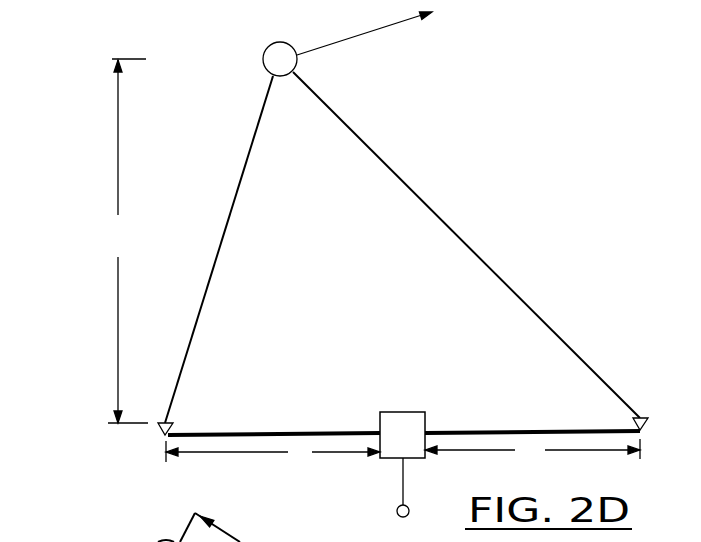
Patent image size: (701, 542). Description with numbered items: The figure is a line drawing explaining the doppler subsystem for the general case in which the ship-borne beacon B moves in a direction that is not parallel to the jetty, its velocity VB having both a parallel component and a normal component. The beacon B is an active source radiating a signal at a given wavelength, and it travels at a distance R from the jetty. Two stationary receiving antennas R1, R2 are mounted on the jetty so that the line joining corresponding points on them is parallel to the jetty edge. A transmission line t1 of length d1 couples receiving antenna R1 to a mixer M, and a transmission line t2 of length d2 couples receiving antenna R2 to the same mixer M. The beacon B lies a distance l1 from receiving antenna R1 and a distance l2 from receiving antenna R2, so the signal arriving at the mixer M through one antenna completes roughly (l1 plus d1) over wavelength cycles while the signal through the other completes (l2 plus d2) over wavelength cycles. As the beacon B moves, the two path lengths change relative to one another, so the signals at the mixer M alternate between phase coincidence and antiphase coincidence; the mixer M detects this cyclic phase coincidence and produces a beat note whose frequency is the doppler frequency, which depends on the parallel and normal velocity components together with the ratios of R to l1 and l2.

The beacon B is at (280, 59).
The beacon velocity VB is at (376, 27).
The distance from jetty R is at (128, 241).
The distance from beacon to receiving antenna R1 l1 is at (262, 56).
The distance from beacon to receiving antenna R2 l2 is at (317, 22).
The receiving antenna R1 is at (158, 440).
The receiving antenna R2 is at (647, 420).
The transmission line t1 is at (283, 432).
The transmission line t2 is at (505, 430).
The length of transmission line t1 d1 is at (273, 454).
The length of transmission line t2 d2 is at (532, 453).
The mixer M is at (402, 464).